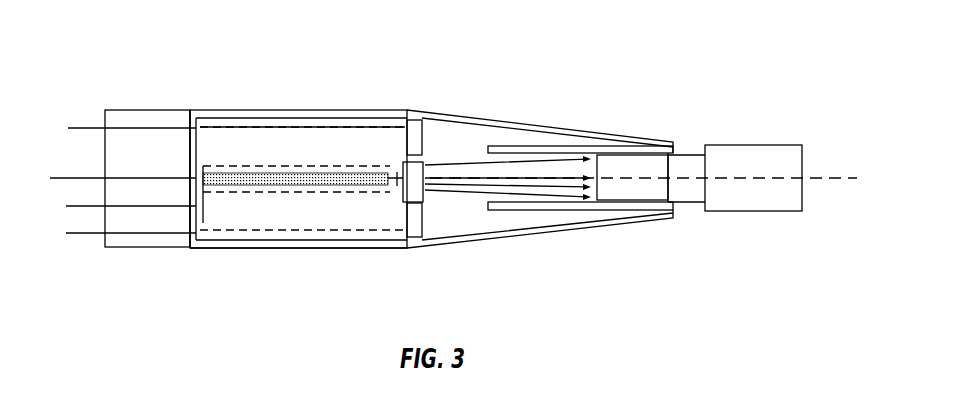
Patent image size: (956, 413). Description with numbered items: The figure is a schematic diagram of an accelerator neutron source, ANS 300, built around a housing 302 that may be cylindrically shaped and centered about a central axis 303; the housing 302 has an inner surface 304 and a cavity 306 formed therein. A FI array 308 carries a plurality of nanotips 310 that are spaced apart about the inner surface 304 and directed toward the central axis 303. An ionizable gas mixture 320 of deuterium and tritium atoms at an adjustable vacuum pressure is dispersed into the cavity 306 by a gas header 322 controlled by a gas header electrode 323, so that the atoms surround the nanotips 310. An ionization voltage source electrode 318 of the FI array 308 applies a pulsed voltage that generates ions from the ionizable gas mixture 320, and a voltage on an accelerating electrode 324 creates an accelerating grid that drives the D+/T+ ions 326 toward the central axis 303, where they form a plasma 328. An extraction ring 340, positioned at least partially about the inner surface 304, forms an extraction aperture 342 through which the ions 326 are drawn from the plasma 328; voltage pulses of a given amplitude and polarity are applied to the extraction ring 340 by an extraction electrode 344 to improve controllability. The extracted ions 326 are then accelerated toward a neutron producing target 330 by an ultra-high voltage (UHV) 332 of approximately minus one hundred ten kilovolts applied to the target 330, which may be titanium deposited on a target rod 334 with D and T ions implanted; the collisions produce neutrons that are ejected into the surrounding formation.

The ANS 300 is at (674, 64).
The housing 302 is at (258, 110).
The central axis 303 is at (823, 172).
The inner surface 304 is at (213, 242).
The cavity 306 is at (263, 221).
The FI array 308 is at (268, 232).
The nanotips 310 is at (308, 118).
The ionization voltage source electrode 318 is at (83, 127).
The ionizable gas mixture 320 is at (324, 214).
The gas header 322 is at (188, 218).
The gas header electrode 323 is at (84, 207).
The accelerating electrode 324 is at (78, 178).
The D+/T+ ions 326 is at (452, 165).
The plasma 328 is at (365, 173).
The neutron producing target 330 is at (623, 197).
The ultra-high voltage (UHV) 332 is at (778, 200).
The target rod 334 is at (692, 196).
The extraction ring 340 is at (425, 197).
The extraction aperture 342 is at (412, 192).
The extraction electrode 344 is at (88, 234).